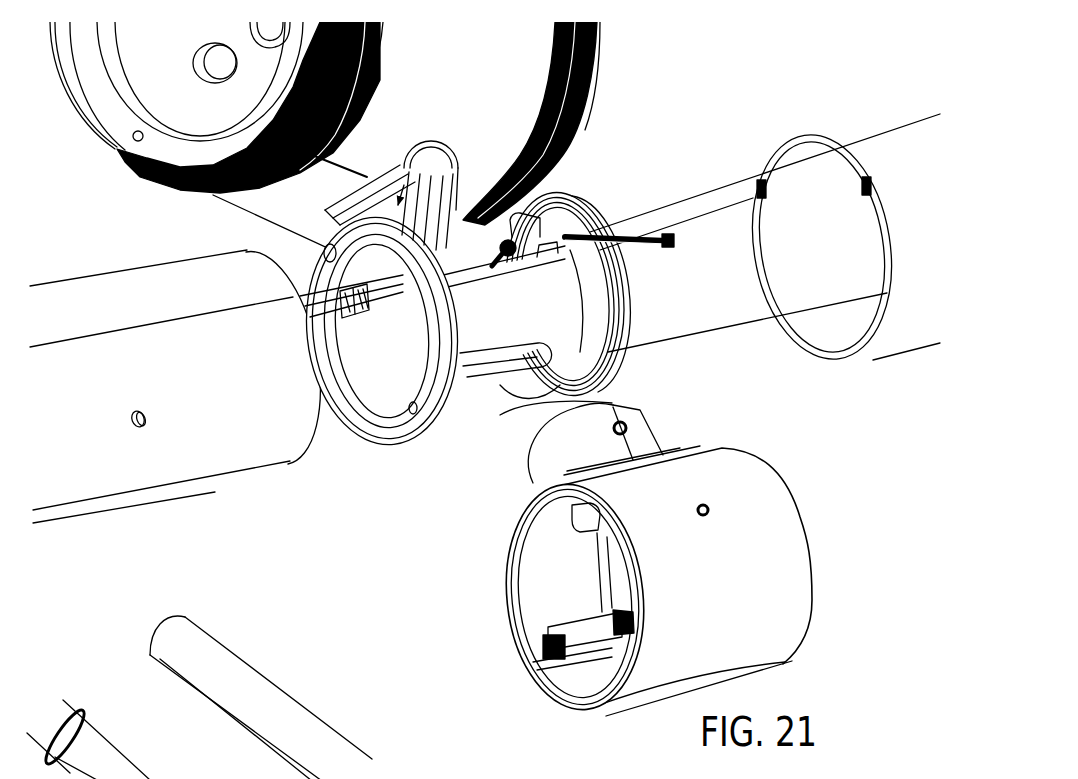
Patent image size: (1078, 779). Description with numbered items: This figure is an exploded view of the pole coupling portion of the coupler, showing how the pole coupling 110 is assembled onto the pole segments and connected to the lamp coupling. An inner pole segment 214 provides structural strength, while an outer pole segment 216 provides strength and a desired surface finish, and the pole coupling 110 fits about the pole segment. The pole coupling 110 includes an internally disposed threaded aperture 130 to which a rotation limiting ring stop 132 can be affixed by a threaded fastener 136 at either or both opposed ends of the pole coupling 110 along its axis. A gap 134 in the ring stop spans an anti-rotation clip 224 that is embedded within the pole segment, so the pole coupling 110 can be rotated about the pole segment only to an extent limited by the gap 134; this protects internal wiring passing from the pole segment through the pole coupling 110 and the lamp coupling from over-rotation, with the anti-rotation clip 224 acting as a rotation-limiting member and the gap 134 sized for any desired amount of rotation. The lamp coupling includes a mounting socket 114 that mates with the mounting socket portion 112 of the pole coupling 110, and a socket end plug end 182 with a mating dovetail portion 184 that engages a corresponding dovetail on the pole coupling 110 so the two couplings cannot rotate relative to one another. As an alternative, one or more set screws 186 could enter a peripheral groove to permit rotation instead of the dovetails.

The pole coupling 110 is at (792, 483).
The mounting socket portion 112 is at (641, 408).
The mounting socket 114 is at (468, 179).
The threaded aperture 130 is at (542, 630).
The rotation limiting ring stop 132 is at (606, 353).
The gap 134 is at (565, 376).
The threaded fastener 136 is at (584, 216).
The socket end plug end 182 is at (330, 228).
The mating dovetail portion 184 is at (400, 141).
The set screw 186 is at (330, 210).
The inner pole segment 214 is at (717, 322).
The outer pole segment 216 is at (883, 137).
The anti-rotation clip 224 is at (626, 221).